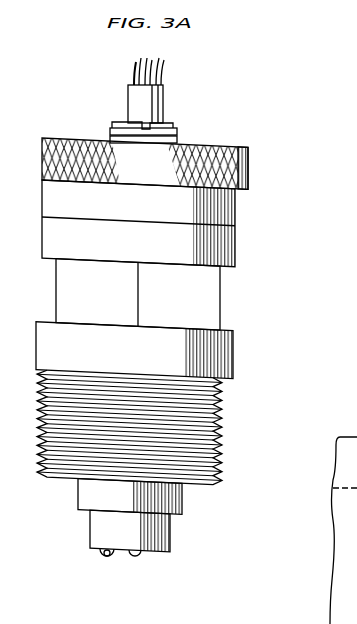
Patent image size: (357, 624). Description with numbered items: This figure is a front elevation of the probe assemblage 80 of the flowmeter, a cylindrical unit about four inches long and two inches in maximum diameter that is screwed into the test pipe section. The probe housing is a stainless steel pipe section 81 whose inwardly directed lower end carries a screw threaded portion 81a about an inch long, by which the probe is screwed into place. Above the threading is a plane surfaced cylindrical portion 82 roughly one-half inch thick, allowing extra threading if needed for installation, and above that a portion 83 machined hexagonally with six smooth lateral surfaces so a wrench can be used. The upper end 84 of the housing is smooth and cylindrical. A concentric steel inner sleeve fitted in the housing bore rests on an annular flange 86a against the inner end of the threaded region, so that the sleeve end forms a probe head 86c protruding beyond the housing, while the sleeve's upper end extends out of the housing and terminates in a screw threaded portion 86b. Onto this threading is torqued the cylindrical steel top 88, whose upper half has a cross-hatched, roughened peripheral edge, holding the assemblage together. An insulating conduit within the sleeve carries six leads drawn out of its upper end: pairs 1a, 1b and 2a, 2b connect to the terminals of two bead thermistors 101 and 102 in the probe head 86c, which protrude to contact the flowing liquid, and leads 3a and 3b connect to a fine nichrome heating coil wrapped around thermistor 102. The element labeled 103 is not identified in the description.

The probe assemblage 80 is at (190, 134).
The stainless steel pipe section 81 is at (240, 226).
The screw threaded portion 81a is at (195, 477).
The plane surfaced cylindrical portion 82 is at (134, 350).
The hexagonally machined portion 83 is at (138, 294).
The upper end 84 is at (138, 223).
The annular flange 86a is at (82, 491).
The screw threaded portion 86b is at (112, 127).
The probe head 86c is at (86, 525).
The cylindrical steel top 88 is at (243, 181).
The lead 1a is at (159, 68).
The lead 1b is at (165, 71).
The lead 2a is at (137, 65).
The lead 2b is at (147, 65).
The lead 3a is at (130, 82).
The lead 3b is at (133, 75).
The bead thermistor 101 is at (137, 553).
The bead thermistor 102 is at (110, 557).
The contact pin 103 is at (100, 552).